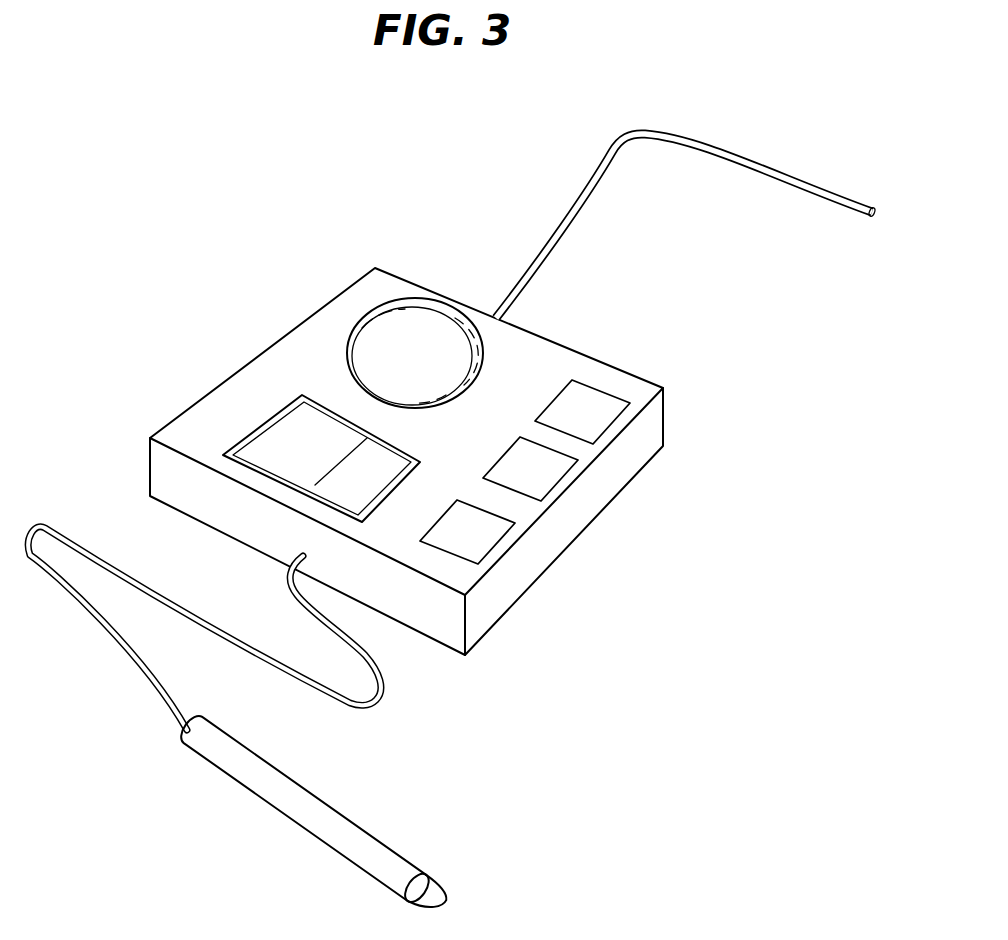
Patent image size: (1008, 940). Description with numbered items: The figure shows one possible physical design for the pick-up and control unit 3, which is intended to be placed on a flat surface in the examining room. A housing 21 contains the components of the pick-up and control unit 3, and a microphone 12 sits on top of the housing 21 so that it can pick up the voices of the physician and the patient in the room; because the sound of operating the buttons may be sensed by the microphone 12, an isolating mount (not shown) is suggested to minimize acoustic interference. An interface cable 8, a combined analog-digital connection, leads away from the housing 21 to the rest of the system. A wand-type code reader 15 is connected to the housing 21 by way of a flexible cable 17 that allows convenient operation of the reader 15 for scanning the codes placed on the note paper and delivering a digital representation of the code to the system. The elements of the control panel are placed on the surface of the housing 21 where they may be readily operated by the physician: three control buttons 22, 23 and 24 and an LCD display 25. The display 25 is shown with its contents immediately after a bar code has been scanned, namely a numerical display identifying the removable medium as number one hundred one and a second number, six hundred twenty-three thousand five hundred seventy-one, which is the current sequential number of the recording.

The pick-up and control unit 3 is at (262, 137).
The interface cable 8 is at (633, 127).
The microphone 12 is at (422, 315).
The wand-type code reader 15 is at (372, 833).
The flexible cable 17 is at (382, 703).
The housing 21 is at (266, 340).
The control button 22 is at (482, 552).
The control button 23 is at (540, 487).
The control button 24 is at (605, 423).
The LCD display 25 is at (262, 447).